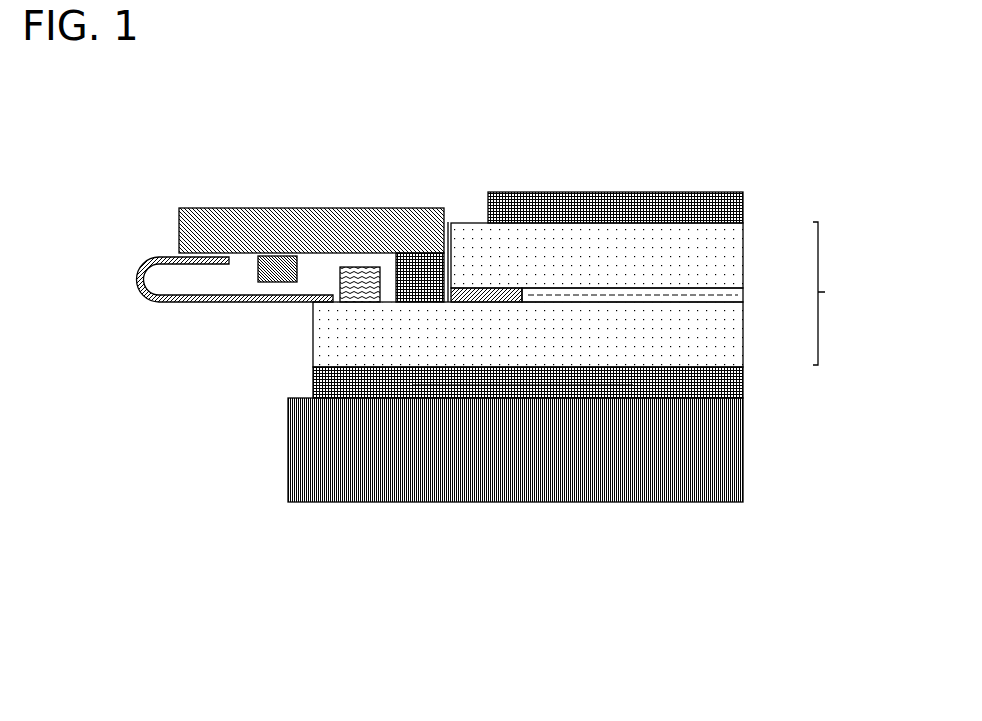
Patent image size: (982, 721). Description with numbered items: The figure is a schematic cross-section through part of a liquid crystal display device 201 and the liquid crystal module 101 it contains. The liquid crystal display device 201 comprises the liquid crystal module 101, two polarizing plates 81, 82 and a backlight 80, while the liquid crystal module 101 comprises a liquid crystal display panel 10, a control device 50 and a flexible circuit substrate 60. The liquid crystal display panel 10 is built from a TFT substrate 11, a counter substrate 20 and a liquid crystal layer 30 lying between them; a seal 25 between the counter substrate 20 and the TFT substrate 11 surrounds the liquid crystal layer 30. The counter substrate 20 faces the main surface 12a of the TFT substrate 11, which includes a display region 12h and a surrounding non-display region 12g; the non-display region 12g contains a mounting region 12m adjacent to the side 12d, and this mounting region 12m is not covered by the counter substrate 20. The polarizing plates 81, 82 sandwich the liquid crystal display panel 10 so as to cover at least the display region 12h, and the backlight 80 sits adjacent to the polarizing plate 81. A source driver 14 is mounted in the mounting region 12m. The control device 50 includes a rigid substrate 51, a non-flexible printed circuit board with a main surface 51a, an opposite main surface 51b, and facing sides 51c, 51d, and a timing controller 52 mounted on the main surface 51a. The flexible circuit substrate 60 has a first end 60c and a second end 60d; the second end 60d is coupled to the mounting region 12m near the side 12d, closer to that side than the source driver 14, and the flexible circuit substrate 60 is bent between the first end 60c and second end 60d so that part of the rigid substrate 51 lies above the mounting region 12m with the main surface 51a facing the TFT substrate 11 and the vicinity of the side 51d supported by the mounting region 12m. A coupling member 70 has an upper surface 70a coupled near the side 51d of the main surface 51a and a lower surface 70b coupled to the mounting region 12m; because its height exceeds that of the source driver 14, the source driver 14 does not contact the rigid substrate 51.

The liquid crystal display panel 10 is at (836, 293).
The TFT substrate 11 is at (743, 336).
The main surface 12a is at (612, 292).
The side 12d is at (311, 366).
The non-display region 12g is at (428, 305).
The display region 12h is at (633, 402).
The mounting region 12m is at (444, 196).
The source driver 14 is at (357, 303).
The counter substrate 20 is at (743, 252).
The seal 25 is at (497, 288).
The liquid crystal layer 30 is at (743, 296).
The control device 50 is at (140, 197).
The rigid substrate 51 is at (257, 243).
The main surface 51a is at (315, 262).
The main surface 51b is at (332, 206).
The side 51c is at (176, 219).
The side 51d is at (451, 221).
The timing controller 52 is at (267, 283).
The flexible circuit substrate 60 is at (138, 283).
The first end 60c is at (233, 253).
The second end 60d is at (332, 293).
The coupling member 70 is at (407, 303).
The upper surface 70a is at (418, 252).
The lower surface 70b is at (418, 387).
The backlight 80 is at (743, 449).
The polarizing plate 81 is at (743, 389).
The polarizing plate 82 is at (743, 204).
The liquid crystal module 101 is at (433, 118).
The liquid crystal display device 201 is at (762, 166).